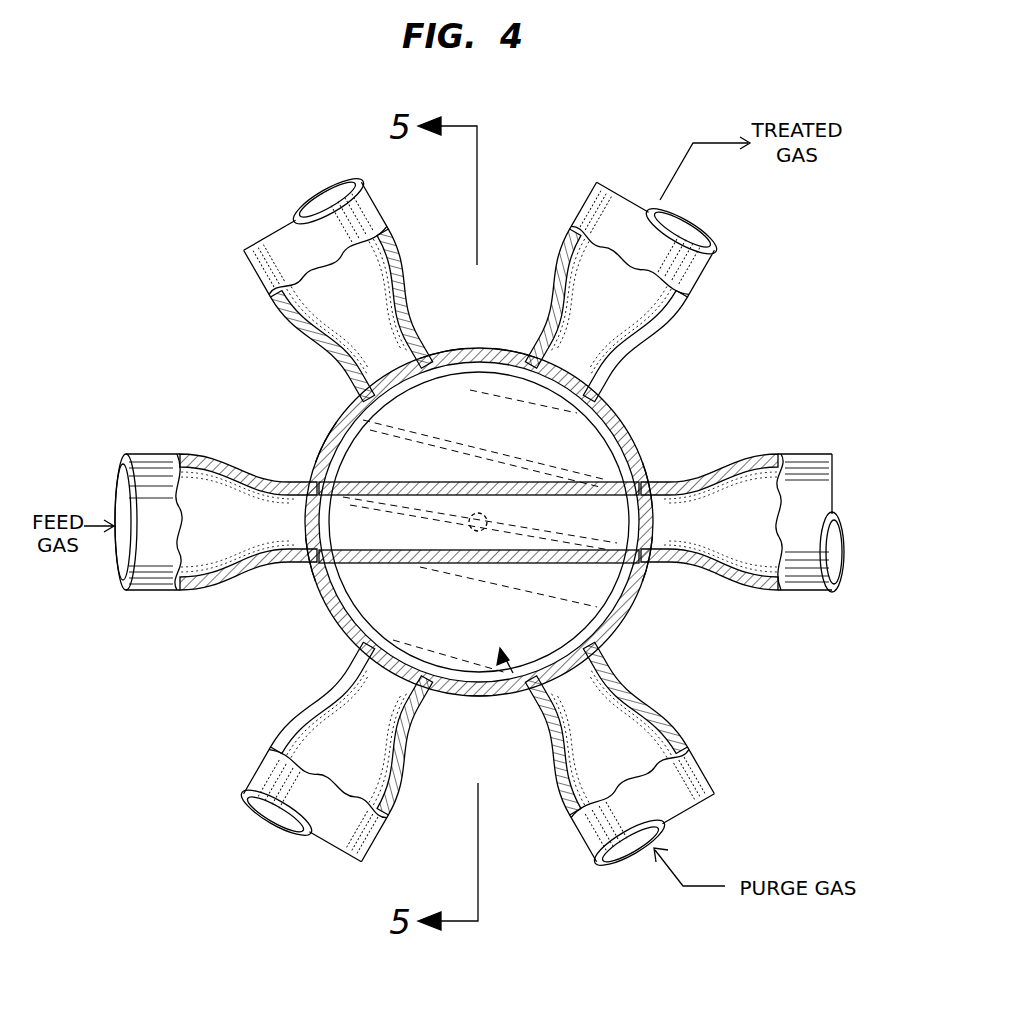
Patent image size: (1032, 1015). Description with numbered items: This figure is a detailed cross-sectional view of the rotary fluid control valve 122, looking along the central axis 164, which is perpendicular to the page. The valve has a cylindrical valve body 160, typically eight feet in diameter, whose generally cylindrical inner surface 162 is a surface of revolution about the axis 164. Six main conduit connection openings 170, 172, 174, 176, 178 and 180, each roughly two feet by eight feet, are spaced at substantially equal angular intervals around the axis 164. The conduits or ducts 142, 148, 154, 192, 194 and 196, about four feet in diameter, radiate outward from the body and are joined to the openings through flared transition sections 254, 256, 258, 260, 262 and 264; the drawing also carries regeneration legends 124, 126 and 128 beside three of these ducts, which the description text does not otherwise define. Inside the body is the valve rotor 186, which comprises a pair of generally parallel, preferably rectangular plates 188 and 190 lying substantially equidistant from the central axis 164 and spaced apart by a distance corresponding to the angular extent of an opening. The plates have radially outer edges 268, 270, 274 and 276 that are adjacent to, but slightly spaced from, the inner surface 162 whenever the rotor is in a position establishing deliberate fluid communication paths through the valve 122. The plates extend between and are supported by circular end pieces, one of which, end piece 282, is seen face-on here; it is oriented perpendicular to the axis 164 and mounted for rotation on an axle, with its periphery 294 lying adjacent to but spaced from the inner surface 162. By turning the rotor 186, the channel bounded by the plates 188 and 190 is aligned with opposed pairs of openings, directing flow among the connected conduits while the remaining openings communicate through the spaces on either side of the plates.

The rotary fluid control valve 122 is at (764, 352).
The regeneration conduit 124 is at (251, 876).
The regeneration conduit 126 is at (273, 174).
The regeneration conduit 128 is at (885, 532).
The conduit 142 is at (197, 590).
The conduit 148 is at (700, 278).
The conduit 154 is at (693, 768).
The valve body 160 is at (450, 347).
The inner surface 162 is at (497, 350).
The central axis 164 is at (486, 516).
The main conduit connection opening 170 is at (360, 376).
The main conduit connection opening 172 is at (298, 570).
The main conduit connection opening 174 is at (337, 640).
The main conduit connection opening 176 is at (625, 627).
The main conduit connection opening 178 is at (655, 540).
The main conduit connection opening 180 is at (605, 438).
The valve rotor 186 is at (515, 697).
The generally parallel plate 188 is at (453, 487).
The generally parallel plate 190 is at (417, 557).
The conduit 192 is at (260, 767).
The conduit 194 is at (258, 297).
The conduit 196 is at (757, 587).
The transition section 254 is at (330, 352).
The transition section 256 is at (262, 440).
The transition section 258 is at (323, 693).
The transition section 260 is at (627, 693).
The transition section 262 is at (716, 470).
The transition section 264 is at (620, 357).
The radially outer edge 268 is at (320, 470).
The radially outer edge 270 is at (636, 497).
The radially outer edge 274 is at (643, 580).
The radially outer edge 276 is at (310, 608).
The circular end piece 282 is at (454, 425).
The periphery 294 is at (447, 675).